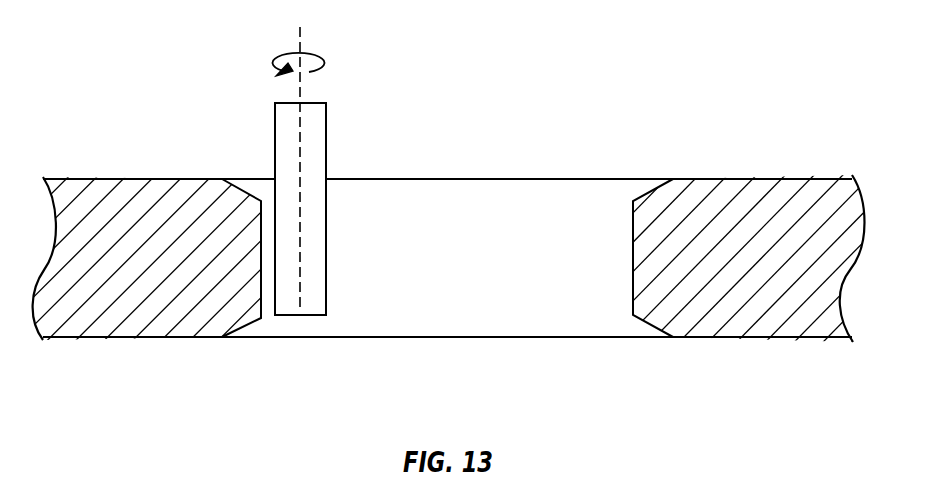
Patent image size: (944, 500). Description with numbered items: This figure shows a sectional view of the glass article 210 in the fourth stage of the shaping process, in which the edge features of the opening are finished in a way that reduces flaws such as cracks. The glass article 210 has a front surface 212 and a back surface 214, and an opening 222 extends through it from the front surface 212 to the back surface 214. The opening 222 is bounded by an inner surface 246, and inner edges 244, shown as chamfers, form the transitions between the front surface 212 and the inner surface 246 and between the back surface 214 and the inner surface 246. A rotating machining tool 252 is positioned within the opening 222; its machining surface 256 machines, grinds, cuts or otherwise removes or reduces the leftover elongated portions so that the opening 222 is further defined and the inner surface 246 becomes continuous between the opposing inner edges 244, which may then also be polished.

The glass article 210 is at (128, 160).
The front surface 212 is at (768, 179).
The back surface 214 is at (753, 337).
The opening 222 is at (452, 302).
The inner edges 244 is at (657, 189).
The inner surface 246 is at (633, 262).
The machining tool 252 is at (289, 140).
The machining surface 256 is at (326, 238).